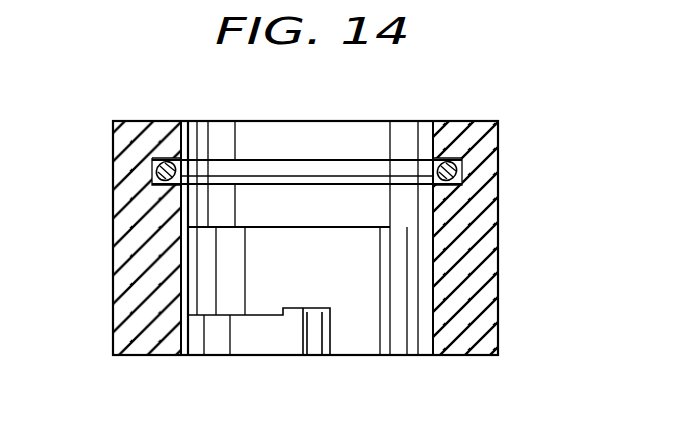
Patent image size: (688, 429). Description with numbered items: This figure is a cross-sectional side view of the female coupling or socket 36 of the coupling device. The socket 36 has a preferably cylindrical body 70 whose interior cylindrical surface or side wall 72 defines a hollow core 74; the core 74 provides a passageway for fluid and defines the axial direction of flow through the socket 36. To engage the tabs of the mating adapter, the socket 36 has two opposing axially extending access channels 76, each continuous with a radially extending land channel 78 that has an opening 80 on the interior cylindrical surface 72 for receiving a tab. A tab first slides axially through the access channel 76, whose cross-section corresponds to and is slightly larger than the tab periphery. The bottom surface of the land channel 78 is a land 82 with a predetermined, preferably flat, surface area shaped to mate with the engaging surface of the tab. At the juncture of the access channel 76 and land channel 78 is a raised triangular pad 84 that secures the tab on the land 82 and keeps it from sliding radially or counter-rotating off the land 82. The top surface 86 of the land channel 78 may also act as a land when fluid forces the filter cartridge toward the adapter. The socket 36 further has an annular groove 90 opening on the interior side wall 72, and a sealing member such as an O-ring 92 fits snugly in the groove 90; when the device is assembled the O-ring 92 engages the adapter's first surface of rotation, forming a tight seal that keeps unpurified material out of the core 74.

The female coupling or socket 36 is at (495, 92).
The cylindrical body 70 is at (490, 292).
The interior cylindrical surface or side wall 72 is at (428, 140).
The hollow core 74 is at (340, 148).
The access channel 76 is at (348, 345).
The land channel 78 is at (234, 284).
The opening 80 is at (395, 335).
The land 82 is at (262, 313).
The raised triangular pad 84 is at (318, 308).
The top surface of the land channel 86 is at (318, 228).
The annular groove 90 is at (242, 162).
The O-ring 92 is at (156, 168).